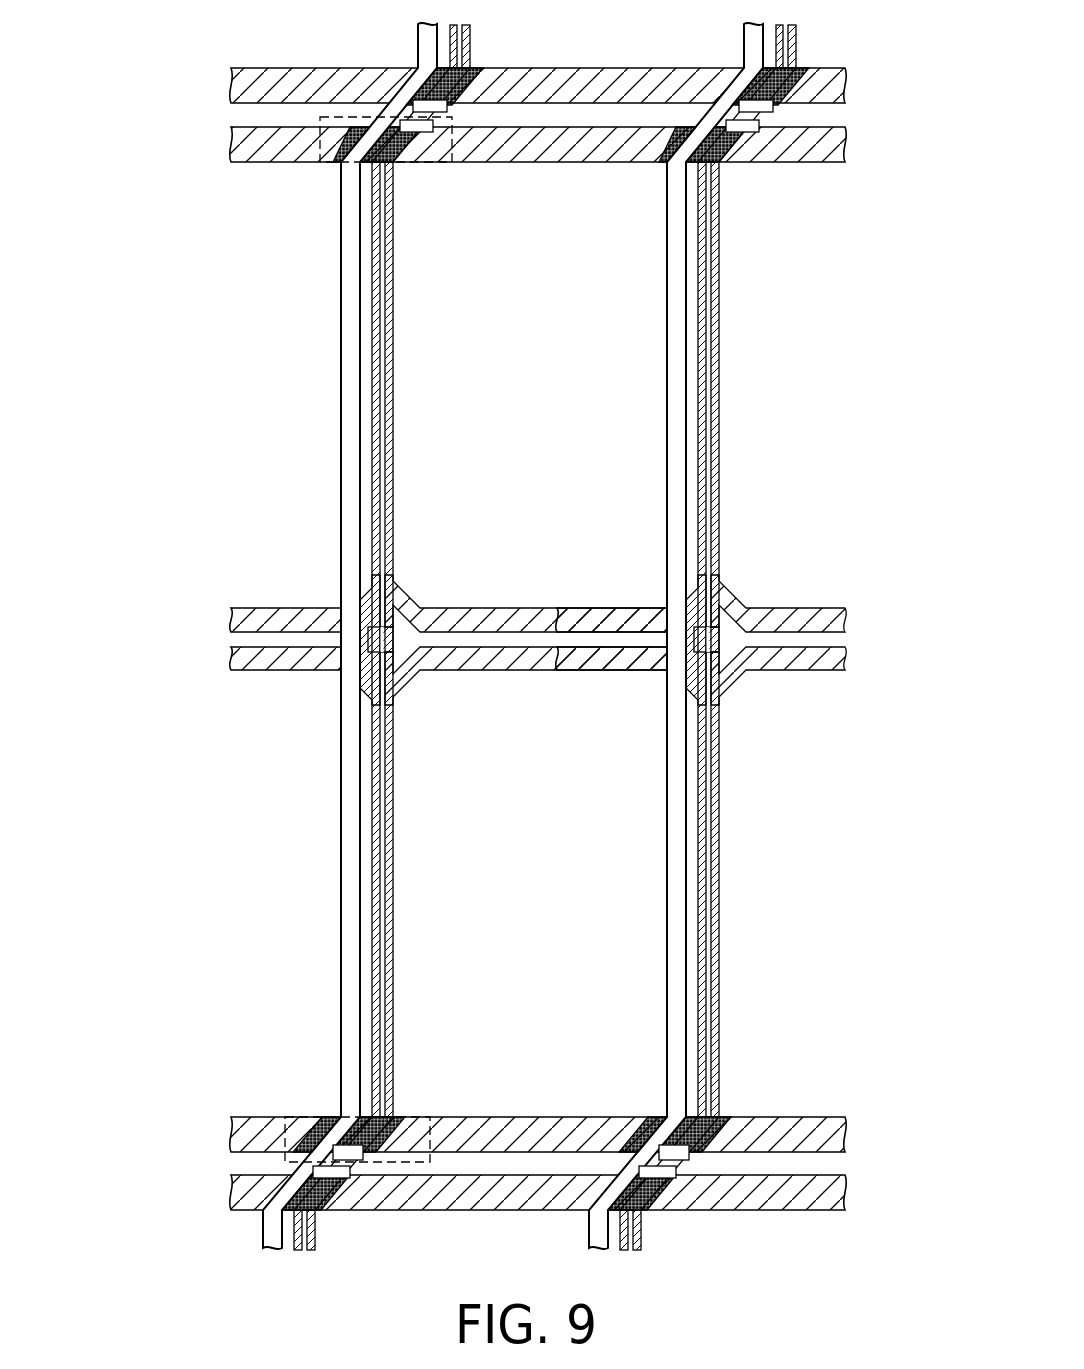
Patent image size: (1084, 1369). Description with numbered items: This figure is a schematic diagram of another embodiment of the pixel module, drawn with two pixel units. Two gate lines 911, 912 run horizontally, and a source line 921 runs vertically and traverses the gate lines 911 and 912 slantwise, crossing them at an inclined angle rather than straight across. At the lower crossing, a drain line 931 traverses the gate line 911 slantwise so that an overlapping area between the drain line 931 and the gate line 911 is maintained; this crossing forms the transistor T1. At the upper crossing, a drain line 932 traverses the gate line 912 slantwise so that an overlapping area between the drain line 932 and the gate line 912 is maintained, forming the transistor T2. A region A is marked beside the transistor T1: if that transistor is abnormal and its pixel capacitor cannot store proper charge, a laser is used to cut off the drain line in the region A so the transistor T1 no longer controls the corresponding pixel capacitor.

The gate line 911 is at (243, 1136).
The gate line 912 is at (253, 141).
The source line 921 is at (340, 348).
The drain line 931 is at (380, 656).
The drain line 932 is at (357, 163).
The transistor T1 is at (295, 1116).
The transistor T2 is at (434, 163).
The region A is at (360, 1112).